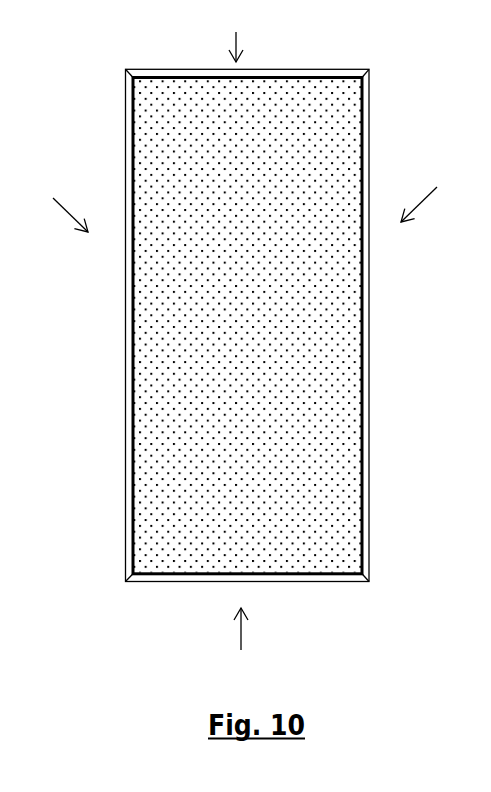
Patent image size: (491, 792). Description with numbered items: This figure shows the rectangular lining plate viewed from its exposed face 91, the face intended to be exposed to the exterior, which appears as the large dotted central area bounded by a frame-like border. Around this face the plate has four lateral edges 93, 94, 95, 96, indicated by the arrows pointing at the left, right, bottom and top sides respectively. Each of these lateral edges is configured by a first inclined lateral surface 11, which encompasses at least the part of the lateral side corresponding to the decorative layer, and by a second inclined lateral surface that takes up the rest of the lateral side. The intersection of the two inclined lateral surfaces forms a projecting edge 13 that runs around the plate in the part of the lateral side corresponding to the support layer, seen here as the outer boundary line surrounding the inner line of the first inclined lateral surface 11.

The first inclined lateral surface 11 is at (130, 352).
The edge 13 is at (328, 68).
The exposed face 91 is at (308, 418).
The lateral edge 93 is at (60, 203).
The lateral edge 94 is at (429, 192).
The lateral edge 95 is at (241, 643).
The lateral edge 96 is at (237, 33).